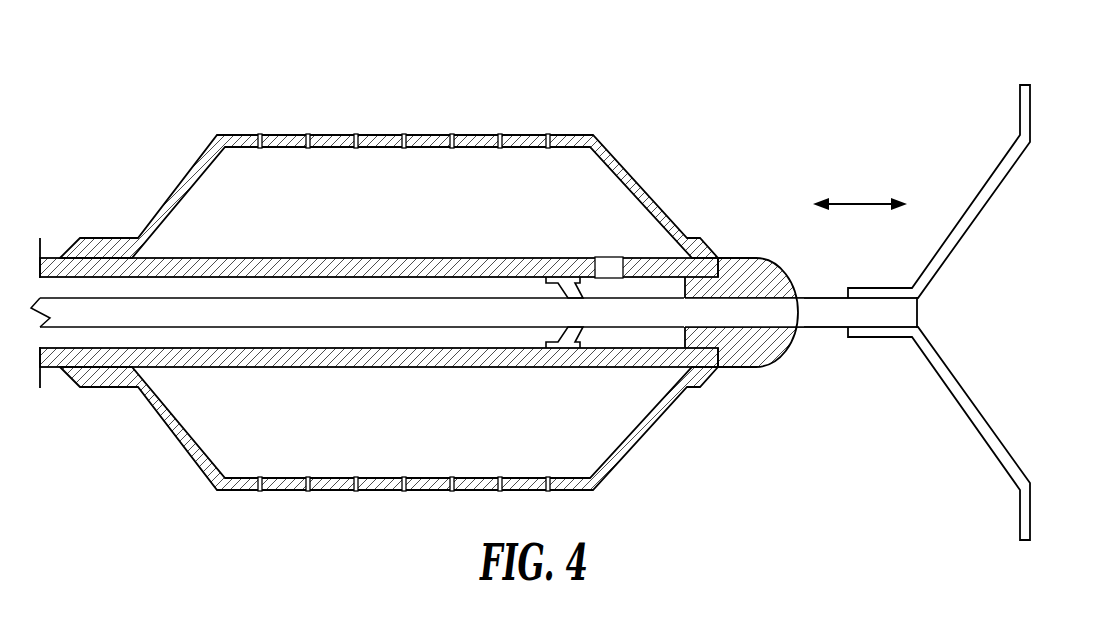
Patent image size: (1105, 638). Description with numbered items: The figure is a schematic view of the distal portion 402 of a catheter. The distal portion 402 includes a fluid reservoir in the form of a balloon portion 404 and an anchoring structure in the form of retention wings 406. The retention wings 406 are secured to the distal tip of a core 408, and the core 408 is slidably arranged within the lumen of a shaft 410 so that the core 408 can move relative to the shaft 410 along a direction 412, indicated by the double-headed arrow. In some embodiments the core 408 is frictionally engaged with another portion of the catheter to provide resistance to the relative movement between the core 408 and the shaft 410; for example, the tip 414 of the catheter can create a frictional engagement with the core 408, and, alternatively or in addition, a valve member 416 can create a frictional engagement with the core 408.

The distal portion 402 is at (127, 83).
The balloon portion 404 is at (178, 186).
The retention wings 406 is at (973, 220).
The core 408 is at (752, 317).
The shaft 410 is at (394, 368).
The direction 412 is at (860, 200).
The tip 414 is at (752, 258).
The valve member 416 is at (568, 287).